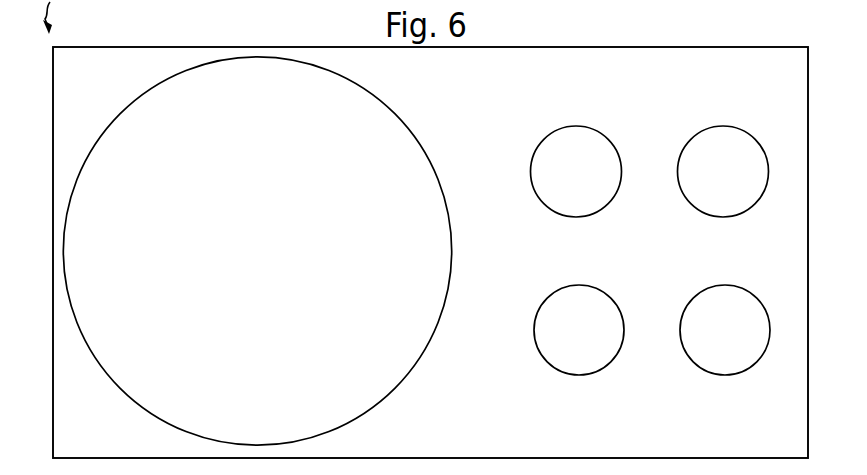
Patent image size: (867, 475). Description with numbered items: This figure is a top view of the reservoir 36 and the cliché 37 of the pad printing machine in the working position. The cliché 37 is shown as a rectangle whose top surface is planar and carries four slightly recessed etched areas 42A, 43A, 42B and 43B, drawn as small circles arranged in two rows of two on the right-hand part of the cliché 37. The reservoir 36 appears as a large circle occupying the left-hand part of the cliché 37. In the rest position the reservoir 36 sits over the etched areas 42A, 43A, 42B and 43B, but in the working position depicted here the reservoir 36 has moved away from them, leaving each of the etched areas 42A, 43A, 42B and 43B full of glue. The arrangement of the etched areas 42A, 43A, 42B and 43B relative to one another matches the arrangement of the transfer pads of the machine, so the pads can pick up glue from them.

The reservoir 36 is at (242, 243).
The cliché 37 is at (487, 256).
The etched area 42A is at (558, 342).
The etched area 42B is at (555, 181).
The etched area 43A is at (704, 342).
The etched area 43B is at (702, 181).